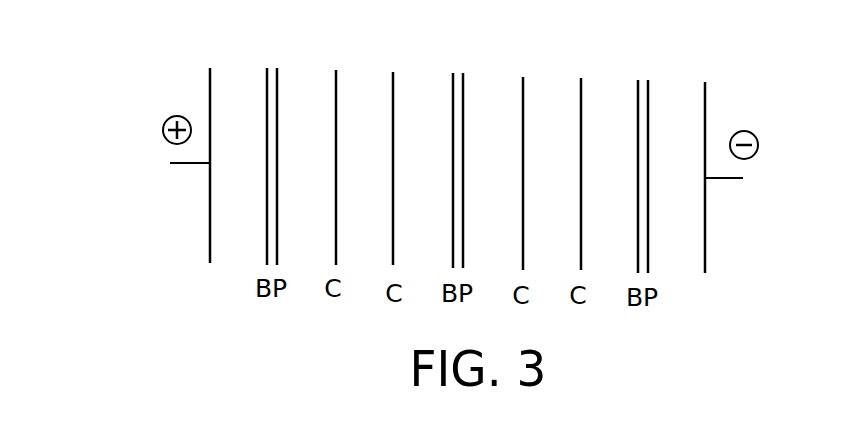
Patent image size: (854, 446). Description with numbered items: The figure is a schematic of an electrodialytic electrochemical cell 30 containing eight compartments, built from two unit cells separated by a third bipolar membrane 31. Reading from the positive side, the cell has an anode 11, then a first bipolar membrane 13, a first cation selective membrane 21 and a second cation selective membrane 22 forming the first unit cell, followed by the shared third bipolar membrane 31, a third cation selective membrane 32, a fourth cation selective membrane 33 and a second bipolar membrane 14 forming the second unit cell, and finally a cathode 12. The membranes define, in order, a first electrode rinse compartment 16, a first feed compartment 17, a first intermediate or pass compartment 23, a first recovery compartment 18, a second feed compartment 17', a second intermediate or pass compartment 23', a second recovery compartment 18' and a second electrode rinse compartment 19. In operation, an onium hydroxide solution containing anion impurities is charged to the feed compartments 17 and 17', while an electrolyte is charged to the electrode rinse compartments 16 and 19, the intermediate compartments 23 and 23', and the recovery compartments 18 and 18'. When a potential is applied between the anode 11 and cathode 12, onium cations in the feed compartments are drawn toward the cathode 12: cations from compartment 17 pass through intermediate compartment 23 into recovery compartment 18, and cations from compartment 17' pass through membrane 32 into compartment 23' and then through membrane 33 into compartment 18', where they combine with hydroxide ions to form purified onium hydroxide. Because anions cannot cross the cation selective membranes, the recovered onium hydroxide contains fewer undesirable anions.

The electrochemical cell 30 is at (152, 78).
The anode 11 is at (211, 150).
The cathode 12 is at (707, 161).
The first bipolar membrane 13 is at (275, 151).
The second bipolar membrane 14 is at (645, 161).
The first cation selective membrane 21 is at (336, 152).
The second cation selective membrane 22 is at (393, 152).
The third bipolar membrane 31 is at (460, 155).
The third cation selective membrane 32 is at (523, 156).
The fourth cation selective membrane 33 is at (582, 156).
The first electrode rinse compartment 16 is at (239, 165).
The first feed compartment 17 is at (306, 165).
The first intermediate or pass compartment 23 is at (364, 167).
The first recovery compartment 18 is at (423, 168).
The second feed compartment 17' is at (493, 170).
The second intermediate or pass compartment 23' is at (552, 172).
The second recovery compartment 18' is at (609, 173).
The second electrode rinse compartment 19 is at (676, 175).